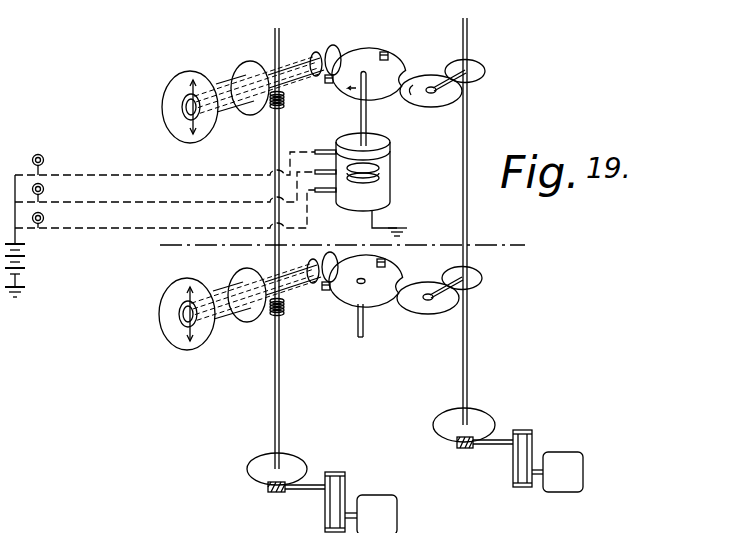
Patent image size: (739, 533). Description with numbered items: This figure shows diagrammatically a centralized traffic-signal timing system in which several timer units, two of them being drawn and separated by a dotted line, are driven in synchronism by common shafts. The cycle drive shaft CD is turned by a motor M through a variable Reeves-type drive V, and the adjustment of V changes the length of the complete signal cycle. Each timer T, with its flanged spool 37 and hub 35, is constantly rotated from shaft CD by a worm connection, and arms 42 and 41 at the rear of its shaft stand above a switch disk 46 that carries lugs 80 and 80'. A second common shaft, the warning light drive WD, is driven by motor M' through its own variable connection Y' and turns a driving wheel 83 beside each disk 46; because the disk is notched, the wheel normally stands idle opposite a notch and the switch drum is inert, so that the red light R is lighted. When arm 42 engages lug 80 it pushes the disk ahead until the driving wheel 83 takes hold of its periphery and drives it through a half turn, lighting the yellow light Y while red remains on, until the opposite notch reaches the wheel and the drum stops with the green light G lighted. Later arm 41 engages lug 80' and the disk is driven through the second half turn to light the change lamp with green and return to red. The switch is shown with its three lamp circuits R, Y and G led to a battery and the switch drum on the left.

The spool flange hub / axis 35 is at (186, 145).
The spool flange 37 is at (180, 76).
The arm (timer cam) 41 is at (336, 47).
The arm (timer cam) 42 is at (318, 51).
The switch disk 46 is at (366, 50).
The lug 80 is at (316, 182).
The lug (stud) 80' is at (407, 143).
The driving wheel 83 is at (427, 77).
The timer T is at (229, 189).
The cycle drive shaft CD is at (273, 394).
The warning light drive shaft WD is at (467, 353).
The variable drive V is at (306, 502).
The motor M is at (371, 514).
The variable connection Y' is at (494, 458).
The motor M' is at (557, 472).
The red light R is at (175, 162).
The yellow light Y is at (175, 186).
The green light G is at (175, 208).